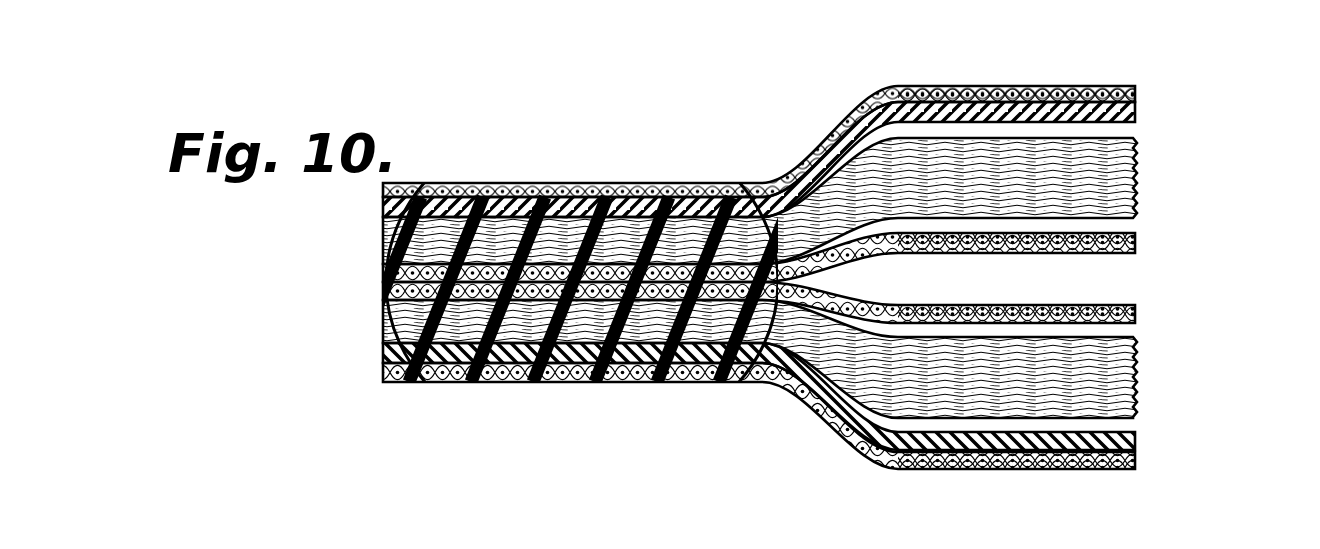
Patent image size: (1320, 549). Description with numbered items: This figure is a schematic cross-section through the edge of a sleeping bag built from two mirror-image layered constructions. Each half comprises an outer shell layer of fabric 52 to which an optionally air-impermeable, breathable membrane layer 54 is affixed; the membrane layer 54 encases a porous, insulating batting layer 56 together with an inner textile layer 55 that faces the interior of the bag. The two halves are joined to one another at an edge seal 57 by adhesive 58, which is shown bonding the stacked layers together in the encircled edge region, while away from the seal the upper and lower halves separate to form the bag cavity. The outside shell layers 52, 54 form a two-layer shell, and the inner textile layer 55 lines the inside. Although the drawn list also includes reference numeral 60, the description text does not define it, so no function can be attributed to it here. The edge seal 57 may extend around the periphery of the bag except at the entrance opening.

The outer shell layer of fabric 52 is at (1137, 93).
The breathable membrane layer 54 is at (1137, 111).
The inner textile layer 55 is at (1137, 252).
The porous insulating batting layer 56 is at (1137, 183).
The edge seal 57 is at (583, 171).
The adhesive 58 is at (559, 365).
The adhesive layer 60 is at (1118, 130).